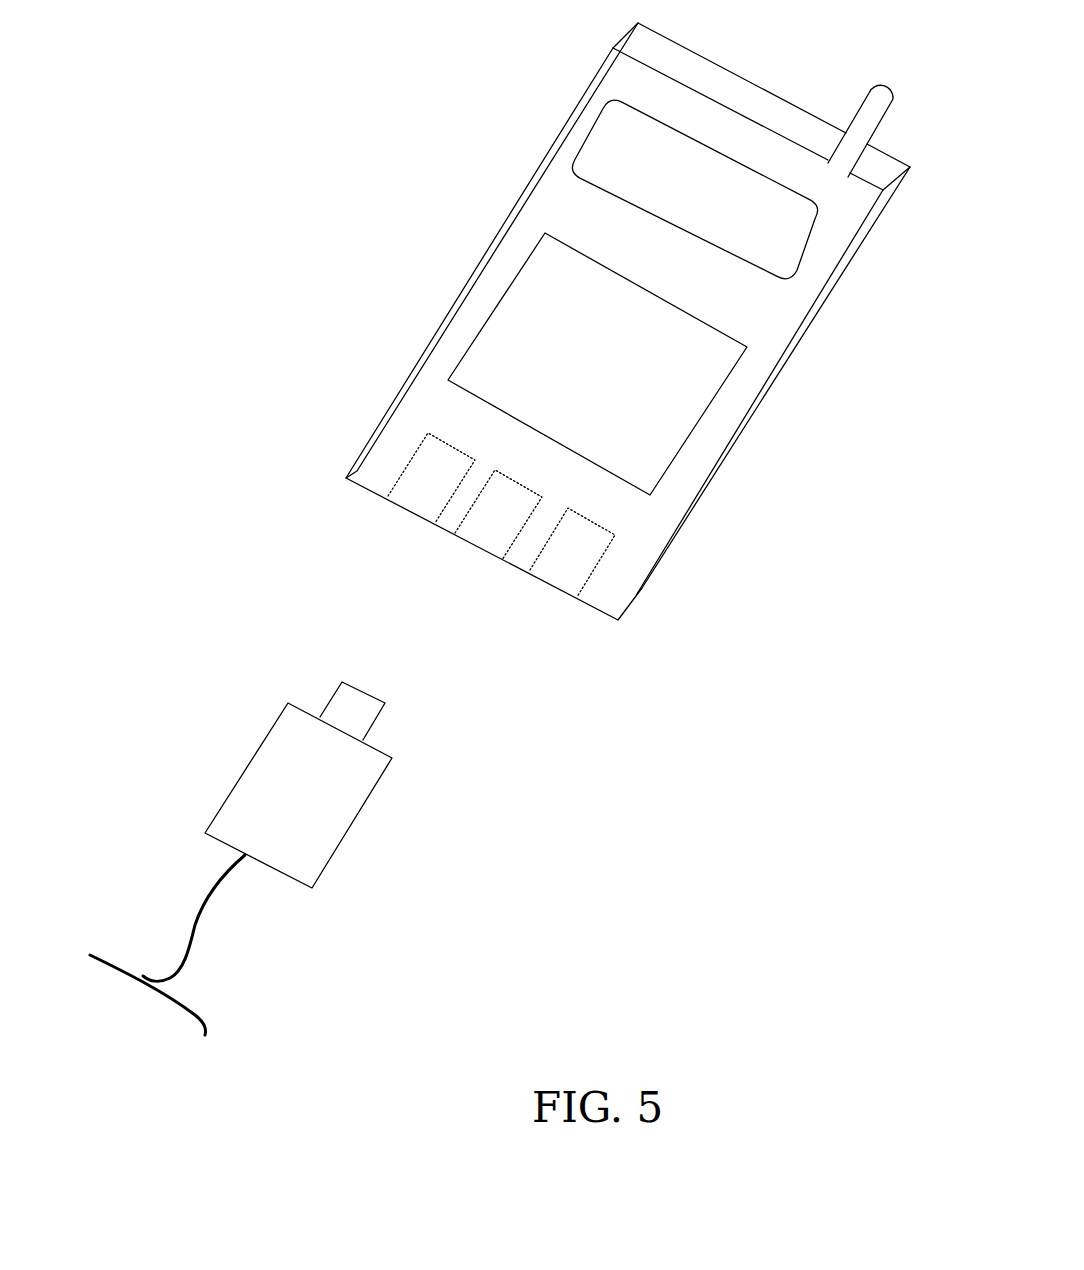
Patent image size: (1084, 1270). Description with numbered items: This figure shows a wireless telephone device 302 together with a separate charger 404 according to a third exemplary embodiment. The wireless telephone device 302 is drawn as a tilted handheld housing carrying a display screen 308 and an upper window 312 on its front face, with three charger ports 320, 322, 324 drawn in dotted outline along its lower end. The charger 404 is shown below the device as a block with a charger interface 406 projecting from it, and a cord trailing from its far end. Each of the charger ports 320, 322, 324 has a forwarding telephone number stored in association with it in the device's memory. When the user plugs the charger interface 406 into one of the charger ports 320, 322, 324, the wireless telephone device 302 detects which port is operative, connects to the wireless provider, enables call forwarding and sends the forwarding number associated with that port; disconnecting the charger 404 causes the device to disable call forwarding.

The wireless telephone device 302 is at (795, 305).
The display screen 308 is at (662, 317).
The upper window / opening 312 is at (613, 122).
The charger port 320 is at (570, 576).
The charger port 322 is at (497, 530).
The charger port 324 is at (416, 482).
The charger 404 is at (346, 803).
The charger interface 406 is at (358, 722).